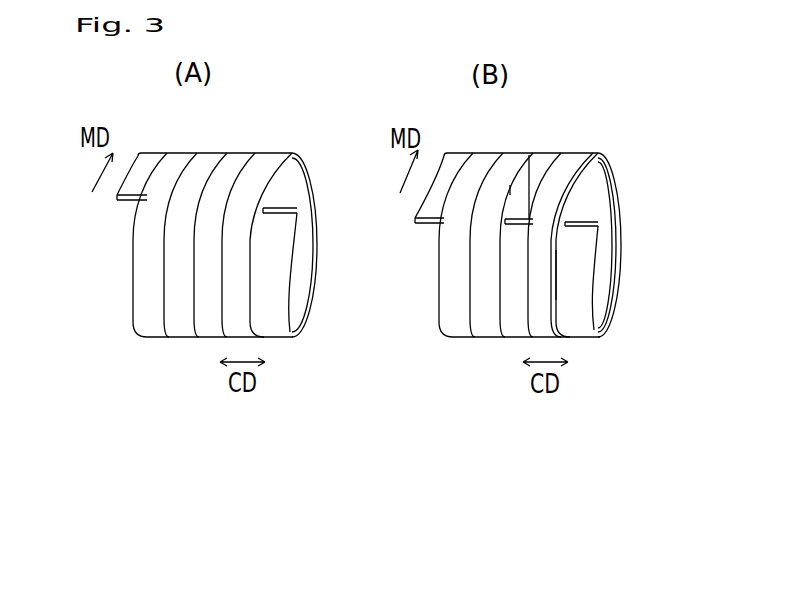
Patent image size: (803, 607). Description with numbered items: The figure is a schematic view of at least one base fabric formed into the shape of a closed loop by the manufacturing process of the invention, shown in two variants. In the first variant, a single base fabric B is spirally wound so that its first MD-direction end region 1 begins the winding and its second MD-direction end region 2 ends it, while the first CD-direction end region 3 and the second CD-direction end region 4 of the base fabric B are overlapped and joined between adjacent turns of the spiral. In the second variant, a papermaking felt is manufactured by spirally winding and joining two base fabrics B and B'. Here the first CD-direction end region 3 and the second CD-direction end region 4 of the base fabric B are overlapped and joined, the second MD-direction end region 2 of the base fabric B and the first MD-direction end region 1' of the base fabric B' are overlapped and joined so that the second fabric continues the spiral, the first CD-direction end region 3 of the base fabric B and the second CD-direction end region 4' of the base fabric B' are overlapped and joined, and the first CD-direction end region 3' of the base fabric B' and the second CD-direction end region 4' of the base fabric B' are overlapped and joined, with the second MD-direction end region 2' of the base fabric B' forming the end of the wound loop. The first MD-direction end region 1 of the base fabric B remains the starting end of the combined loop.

The first MD-direction end region 1 is at (267, 224).
The second MD-direction end region 2 is at (398, 283).
The first CD-direction end region 3 is at (325, 249).
The second CD-direction end region 4 is at (334, 284).
The base fabric B is at (377, 251).
The first MD-direction end region 1' is at (557, 161).
The second MD-direction end region 2' is at (616, 253).
The first CD-direction end region 3' is at (569, 332).
The second CD-direction end region 4' is at (588, 194).
The base fabric B' is at (595, 216).